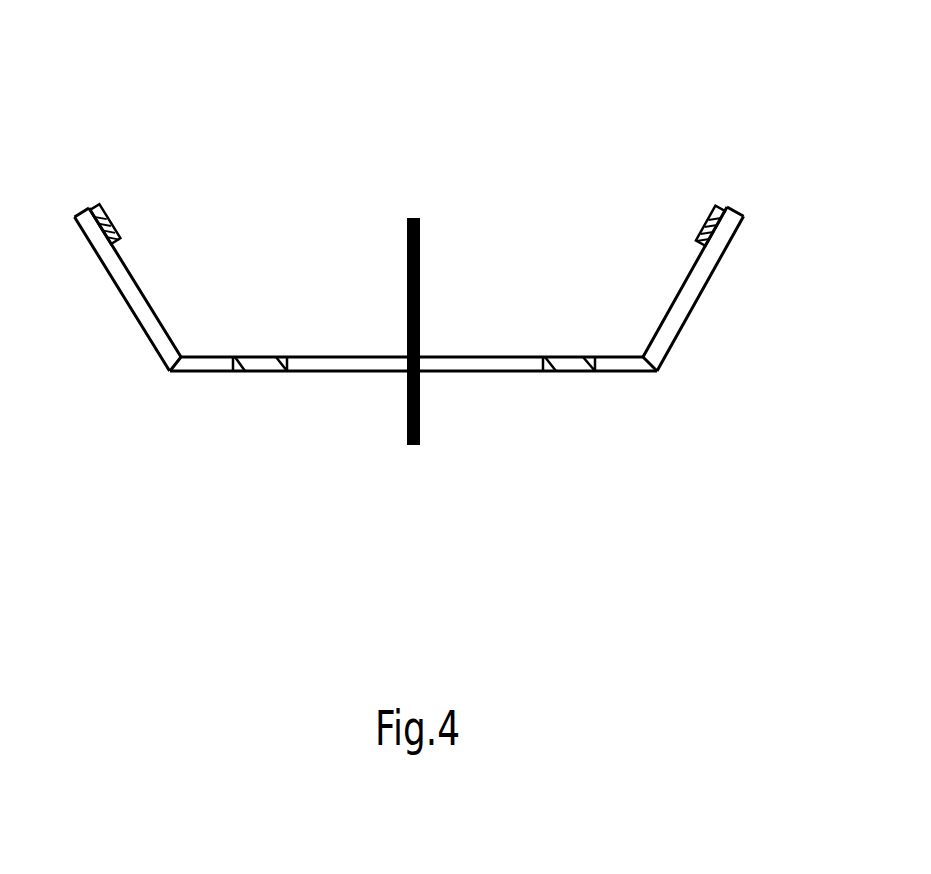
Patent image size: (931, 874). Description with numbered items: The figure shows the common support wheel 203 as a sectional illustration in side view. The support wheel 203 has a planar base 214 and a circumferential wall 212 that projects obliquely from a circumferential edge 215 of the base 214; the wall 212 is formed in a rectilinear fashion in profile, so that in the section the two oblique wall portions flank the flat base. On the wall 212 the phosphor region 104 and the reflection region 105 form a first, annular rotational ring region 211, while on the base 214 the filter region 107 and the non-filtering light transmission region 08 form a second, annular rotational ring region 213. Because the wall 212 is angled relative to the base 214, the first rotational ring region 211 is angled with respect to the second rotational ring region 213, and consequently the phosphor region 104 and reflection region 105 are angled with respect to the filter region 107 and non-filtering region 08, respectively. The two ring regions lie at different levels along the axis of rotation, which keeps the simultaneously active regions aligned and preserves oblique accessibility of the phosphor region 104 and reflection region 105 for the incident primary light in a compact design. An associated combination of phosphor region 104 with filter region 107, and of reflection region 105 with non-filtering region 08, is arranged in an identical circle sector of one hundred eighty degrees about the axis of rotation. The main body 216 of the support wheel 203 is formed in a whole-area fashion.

The support wheel 203 is at (377, 118).
The first rotational ring region 211 is at (114, 222).
The phosphor region 104 is at (144, 220).
The reflection region 105 is at (677, 221).
The wall 212 is at (122, 275).
The main body 216 is at (708, 277).
The second rotational ring region 213 is at (266, 373).
The filter region 107 is at (261, 432).
The non-filtering light transmission region 08 is at (569, 422).
The base 214 is at (468, 373).
The circumferential edge 215 is at (655, 373).